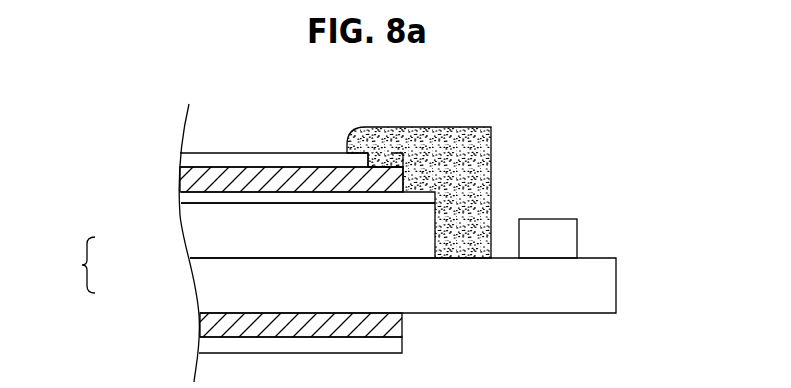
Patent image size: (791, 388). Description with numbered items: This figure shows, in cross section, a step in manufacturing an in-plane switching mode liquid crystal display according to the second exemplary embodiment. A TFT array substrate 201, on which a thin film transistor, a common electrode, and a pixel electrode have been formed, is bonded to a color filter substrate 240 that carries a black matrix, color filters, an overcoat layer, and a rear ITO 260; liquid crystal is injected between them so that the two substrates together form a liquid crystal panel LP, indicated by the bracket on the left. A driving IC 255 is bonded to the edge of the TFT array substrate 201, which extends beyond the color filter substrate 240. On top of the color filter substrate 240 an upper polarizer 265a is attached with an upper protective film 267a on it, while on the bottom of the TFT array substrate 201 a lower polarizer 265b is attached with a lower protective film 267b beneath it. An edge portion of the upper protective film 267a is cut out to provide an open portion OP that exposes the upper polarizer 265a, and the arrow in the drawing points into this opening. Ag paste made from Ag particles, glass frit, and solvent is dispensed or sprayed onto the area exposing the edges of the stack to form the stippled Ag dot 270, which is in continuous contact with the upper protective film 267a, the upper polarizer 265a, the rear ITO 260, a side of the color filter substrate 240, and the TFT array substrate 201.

The TFT array substrate 201 is at (205, 281).
The color filter substrate 240 is at (205, 237).
The rear ITO 260 is at (180, 198).
The upper polarizer 265a is at (178, 184).
The upper protective film 267a is at (178, 157).
The lower polarizer 265b is at (202, 319).
The lower protective film 267b is at (202, 343).
The Ag dot 270 is at (473, 165).
The driving IC 255 is at (568, 236).
The open portion OP is at (383, 164).
The liquid crystal panel LP is at (76, 265).